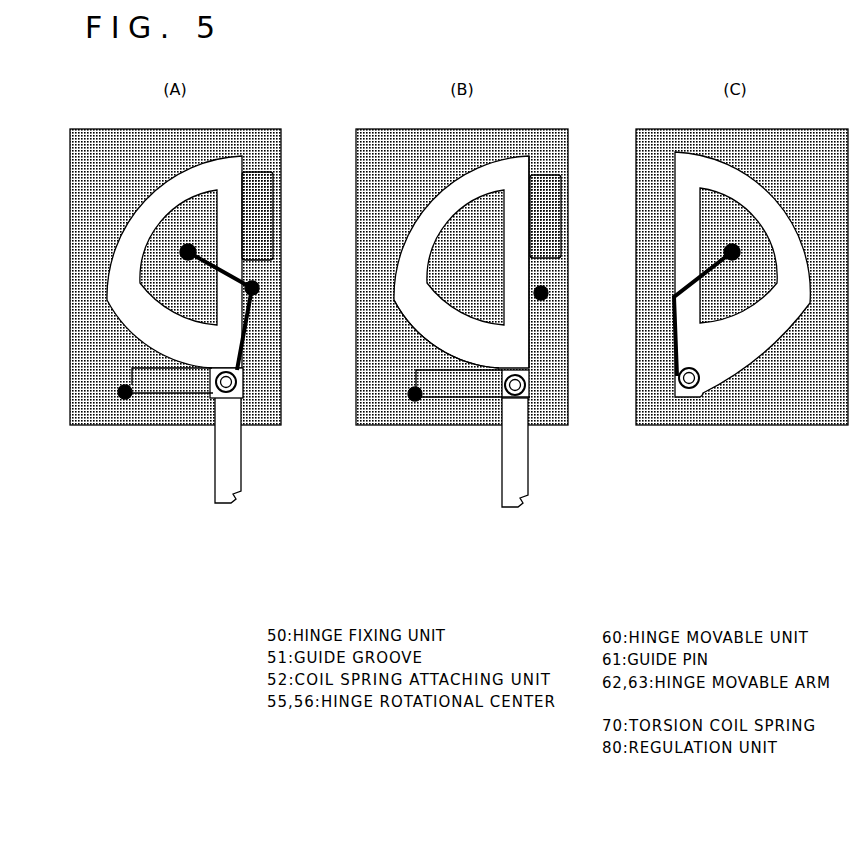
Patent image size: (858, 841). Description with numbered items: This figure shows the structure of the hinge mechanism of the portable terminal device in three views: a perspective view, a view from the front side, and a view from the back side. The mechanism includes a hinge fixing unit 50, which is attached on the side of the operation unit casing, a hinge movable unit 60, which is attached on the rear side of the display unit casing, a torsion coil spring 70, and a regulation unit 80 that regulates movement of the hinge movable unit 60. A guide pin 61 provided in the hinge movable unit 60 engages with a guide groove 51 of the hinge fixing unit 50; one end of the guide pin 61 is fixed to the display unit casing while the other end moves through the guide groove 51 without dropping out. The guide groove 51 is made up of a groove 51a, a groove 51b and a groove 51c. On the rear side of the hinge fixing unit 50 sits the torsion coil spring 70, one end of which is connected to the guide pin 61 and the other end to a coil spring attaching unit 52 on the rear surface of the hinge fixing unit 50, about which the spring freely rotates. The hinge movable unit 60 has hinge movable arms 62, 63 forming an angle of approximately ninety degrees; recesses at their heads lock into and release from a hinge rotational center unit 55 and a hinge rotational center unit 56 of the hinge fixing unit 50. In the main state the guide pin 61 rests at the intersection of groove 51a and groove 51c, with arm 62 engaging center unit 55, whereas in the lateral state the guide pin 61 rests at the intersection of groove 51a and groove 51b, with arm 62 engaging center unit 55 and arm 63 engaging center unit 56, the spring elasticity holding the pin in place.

The hinge fixing unit 50 is at (84, 142).
The guide groove 51 is at (189, 178).
The groove 51a is at (497, 346).
The groove 51b is at (478, 181).
The groove 51c is at (518, 282).
The coil spring attaching unit 52 is at (733, 244).
The hinge rotational center unit 55 is at (122, 400).
The hinge rotational center unit 56 is at (258, 288).
The hinge movable unit 60 is at (196, 393).
The guide pin 61 is at (691, 388).
The hinge movable arm 62 is at (180, 387).
The hinge movable arm 63 is at (228, 488).
The torsion coil spring 70 is at (720, 283).
The regulation unit 80 is at (266, 173).